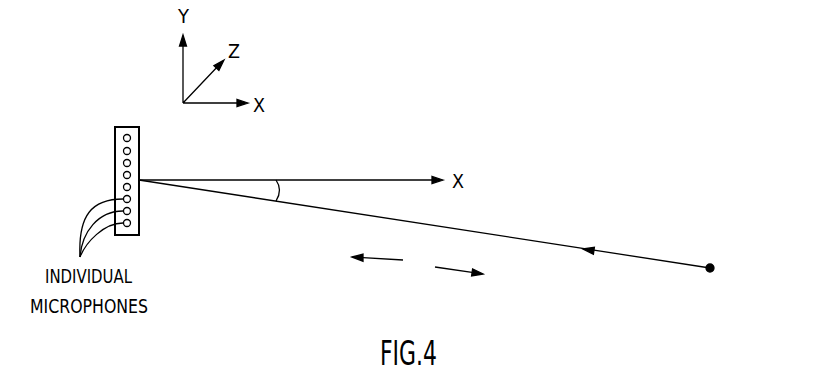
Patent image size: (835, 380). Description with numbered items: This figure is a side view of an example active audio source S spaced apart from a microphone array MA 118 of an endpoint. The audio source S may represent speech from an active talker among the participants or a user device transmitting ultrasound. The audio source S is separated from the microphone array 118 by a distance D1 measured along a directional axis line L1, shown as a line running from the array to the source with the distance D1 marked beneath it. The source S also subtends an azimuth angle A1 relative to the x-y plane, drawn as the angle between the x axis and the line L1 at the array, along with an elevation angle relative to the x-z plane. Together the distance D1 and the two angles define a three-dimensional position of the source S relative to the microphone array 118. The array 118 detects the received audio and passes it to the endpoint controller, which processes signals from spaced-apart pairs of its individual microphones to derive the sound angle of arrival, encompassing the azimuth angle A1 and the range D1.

The microphone array 118 is at (115, 169).
The directional axis line L1 is at (497, 232).
The active audio source S is at (732, 288).
The azimuth angle A1 is at (279, 190).
The distance D1 is at (425, 224).